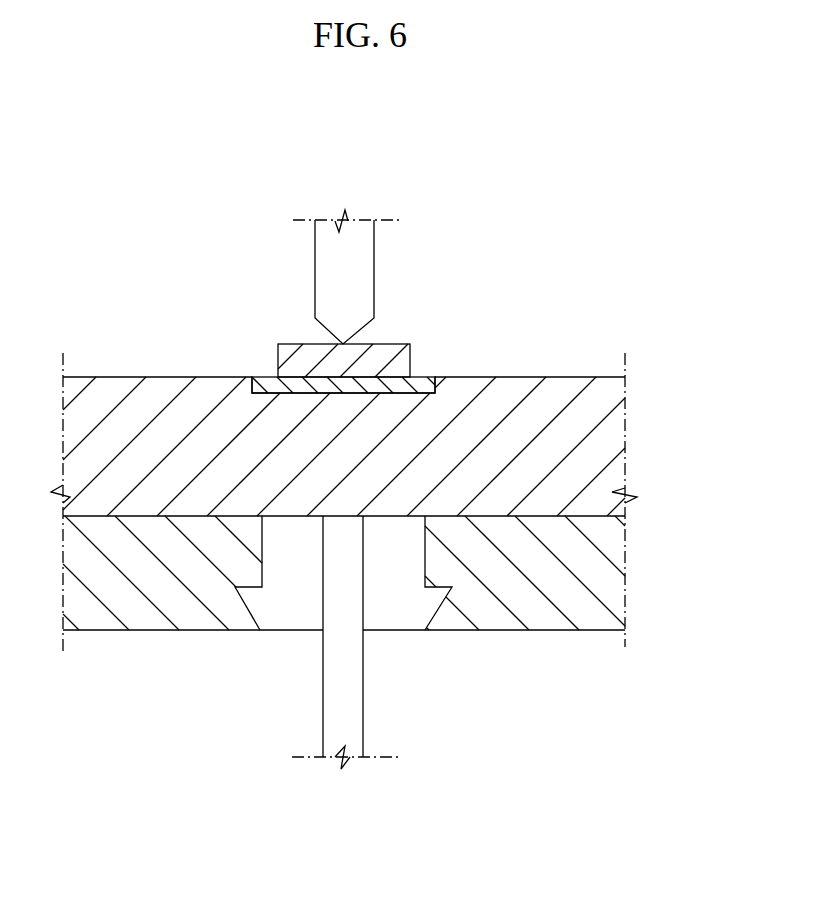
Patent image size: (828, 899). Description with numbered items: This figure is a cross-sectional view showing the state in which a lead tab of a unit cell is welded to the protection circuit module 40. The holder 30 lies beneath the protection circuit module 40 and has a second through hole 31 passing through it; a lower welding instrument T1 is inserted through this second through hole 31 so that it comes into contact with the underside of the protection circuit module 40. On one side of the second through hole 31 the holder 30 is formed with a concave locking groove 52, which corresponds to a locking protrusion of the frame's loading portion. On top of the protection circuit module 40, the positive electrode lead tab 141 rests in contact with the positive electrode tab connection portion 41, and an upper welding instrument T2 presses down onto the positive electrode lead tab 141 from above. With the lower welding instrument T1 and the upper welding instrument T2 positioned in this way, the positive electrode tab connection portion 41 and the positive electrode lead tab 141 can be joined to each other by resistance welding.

The holder 30 is at (615, 558).
The second through hole 31 is at (397, 593).
The protection circuit module 40 is at (615, 437).
The positive electrode tab connection portion 41 is at (418, 383).
The locking groove 52 is at (257, 612).
The positive electrode lead tab 141 is at (290, 347).
The lower welding instrument T1 is at (358, 710).
The upper welding instrument T2 is at (368, 253).